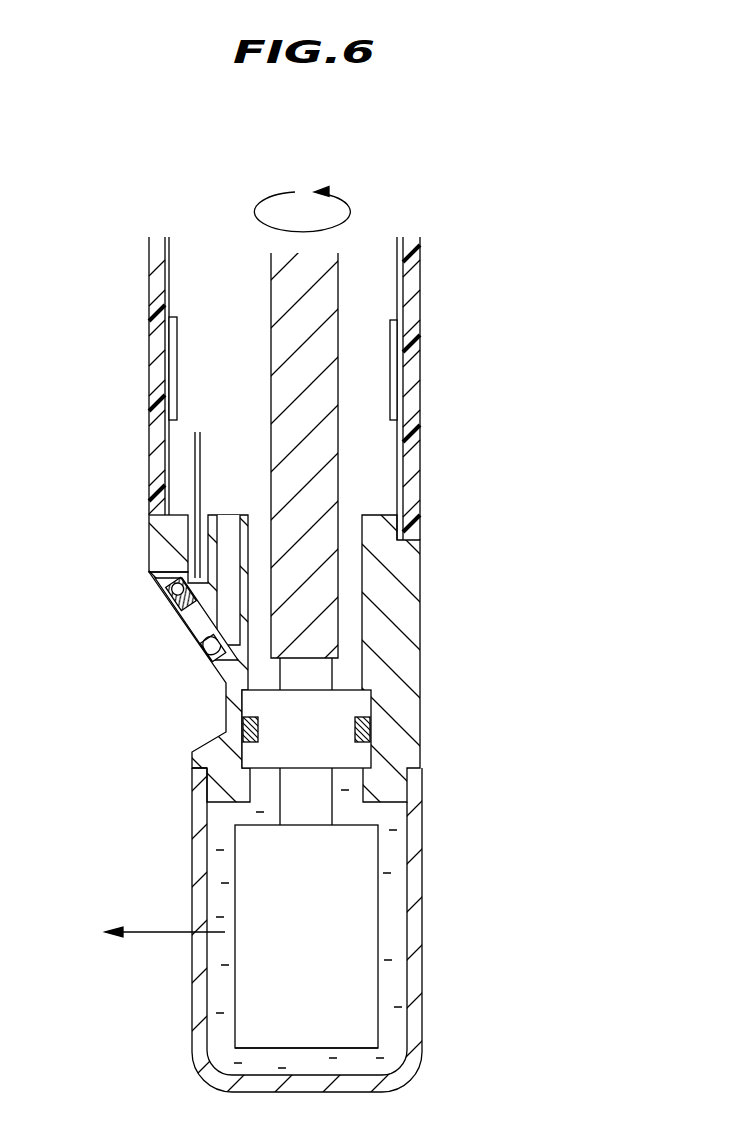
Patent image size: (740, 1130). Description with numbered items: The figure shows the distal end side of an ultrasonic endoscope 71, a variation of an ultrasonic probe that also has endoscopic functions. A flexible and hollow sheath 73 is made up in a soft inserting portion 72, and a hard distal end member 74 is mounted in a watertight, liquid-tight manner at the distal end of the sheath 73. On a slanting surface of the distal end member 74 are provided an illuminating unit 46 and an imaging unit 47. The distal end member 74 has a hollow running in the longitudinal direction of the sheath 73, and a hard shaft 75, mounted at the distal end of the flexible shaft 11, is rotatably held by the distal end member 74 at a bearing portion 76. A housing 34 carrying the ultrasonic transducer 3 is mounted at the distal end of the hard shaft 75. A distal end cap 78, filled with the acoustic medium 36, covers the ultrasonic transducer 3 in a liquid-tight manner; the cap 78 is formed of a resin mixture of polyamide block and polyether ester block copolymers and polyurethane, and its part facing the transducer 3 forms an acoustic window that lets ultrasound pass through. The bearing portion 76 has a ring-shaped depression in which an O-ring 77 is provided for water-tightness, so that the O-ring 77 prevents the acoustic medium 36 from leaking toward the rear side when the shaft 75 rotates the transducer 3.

The flexible shaft 11 is at (323, 288).
The ultrasonic endoscope 71 is at (492, 367).
The soft inserting portion 72 is at (150, 302).
The sheath 73 is at (402, 280).
The distal end member 74 is at (415, 563).
The hard shaft 75 is at (318, 675).
The bearing portion 76 is at (362, 753).
The O-ring 77 is at (370, 730).
The distal end cap 78 is at (415, 993).
The imaging unit 47 is at (170, 603).
The illuminating unit 46 is at (199, 652).
The ultrasonic transducer 3 is at (235, 900).
The housing 34 is at (237, 953).
The acoustic medium 36 is at (393, 916).